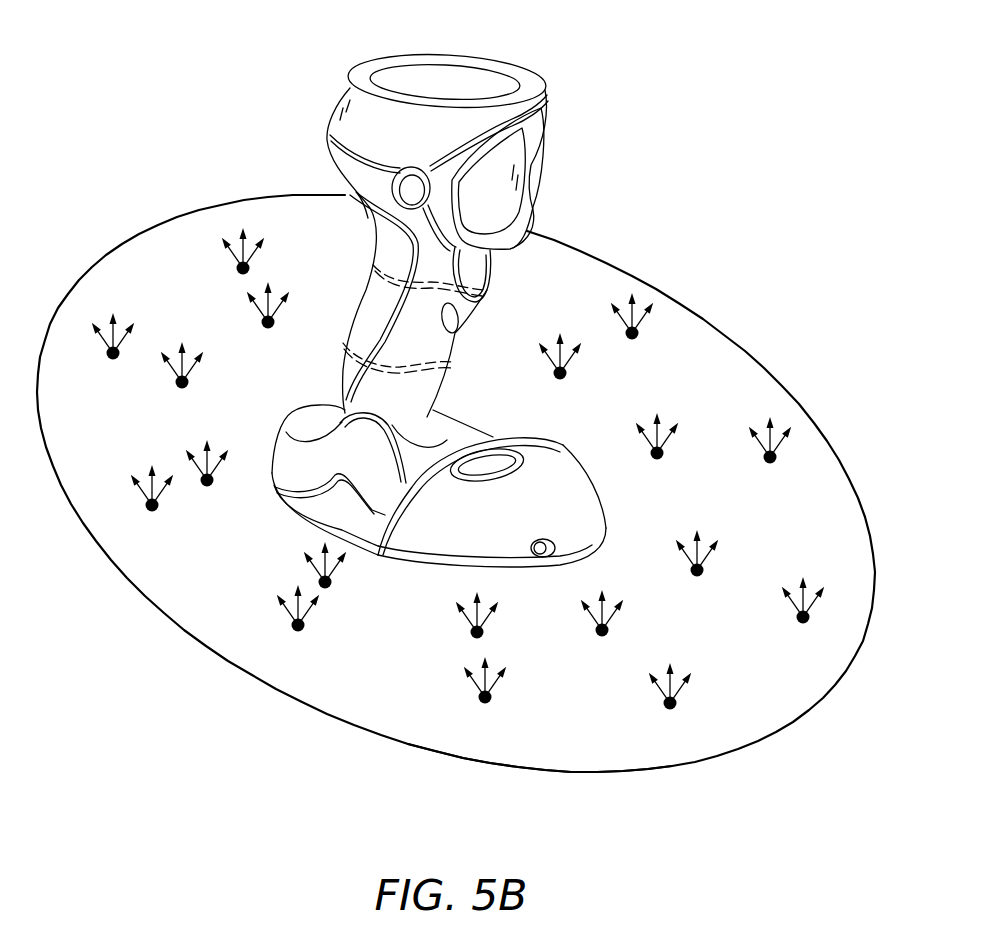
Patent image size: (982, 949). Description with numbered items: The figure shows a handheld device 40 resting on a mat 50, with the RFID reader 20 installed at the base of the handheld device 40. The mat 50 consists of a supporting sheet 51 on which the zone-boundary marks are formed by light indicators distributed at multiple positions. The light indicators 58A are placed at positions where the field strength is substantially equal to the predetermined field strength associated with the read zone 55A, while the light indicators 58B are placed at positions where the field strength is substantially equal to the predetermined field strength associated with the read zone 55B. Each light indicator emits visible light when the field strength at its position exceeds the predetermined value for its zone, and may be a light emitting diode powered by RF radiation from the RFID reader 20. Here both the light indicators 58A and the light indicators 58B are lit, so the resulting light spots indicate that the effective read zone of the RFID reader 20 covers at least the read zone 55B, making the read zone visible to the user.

The RFID reader 20 is at (564, 447).
The handheld device 40 is at (394, 66).
The mat 50 is at (737, 299).
The supporting sheet 51 is at (593, 762).
The read zone 55A is at (620, 525).
The read zone 55B is at (723, 587).
The light indicators 58A is at (268, 329).
The light indicators 58B is at (236, 268).